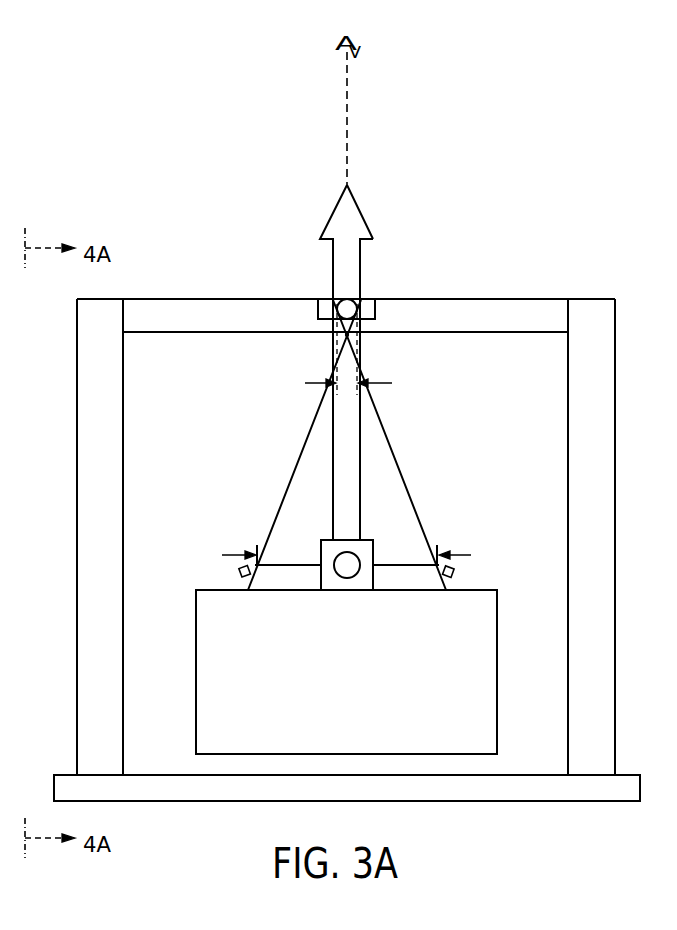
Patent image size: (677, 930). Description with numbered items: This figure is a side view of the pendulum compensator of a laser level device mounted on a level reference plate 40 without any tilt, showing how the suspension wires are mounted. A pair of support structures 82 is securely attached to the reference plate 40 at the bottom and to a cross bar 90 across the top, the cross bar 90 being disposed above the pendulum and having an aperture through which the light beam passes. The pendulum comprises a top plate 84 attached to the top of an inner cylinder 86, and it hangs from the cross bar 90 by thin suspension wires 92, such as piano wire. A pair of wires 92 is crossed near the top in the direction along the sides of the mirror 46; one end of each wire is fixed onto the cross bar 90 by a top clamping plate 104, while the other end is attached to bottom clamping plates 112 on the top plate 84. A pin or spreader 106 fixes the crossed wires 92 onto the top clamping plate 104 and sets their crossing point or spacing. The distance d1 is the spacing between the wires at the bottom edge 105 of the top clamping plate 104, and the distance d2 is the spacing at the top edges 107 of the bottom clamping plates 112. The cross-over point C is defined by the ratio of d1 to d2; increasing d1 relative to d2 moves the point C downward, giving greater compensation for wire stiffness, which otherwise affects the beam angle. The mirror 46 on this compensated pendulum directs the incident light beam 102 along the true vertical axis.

The reference plate 40 is at (524, 803).
The mirror 46 is at (376, 556).
The support structures 82 is at (88, 503).
The top plate 84 is at (282, 562).
The inner cylinder 86 is at (498, 611).
The cross bar 90 is at (485, 302).
The suspension wires 92 is at (288, 486).
The incident light beam 102 is at (352, 192).
The top clamping plate 104 is at (366, 304).
The bottom edge of top clamping plate 105 is at (357, 313).
The pin or spreader 106 is at (338, 303).
The top edges of bottom clamping plates 107 is at (235, 555).
The bottom clamping plates 112 is at (238, 570).
The cross-over point C is at (340, 338).
The distance d1 is at (360, 384).
The distance d2 is at (469, 556).